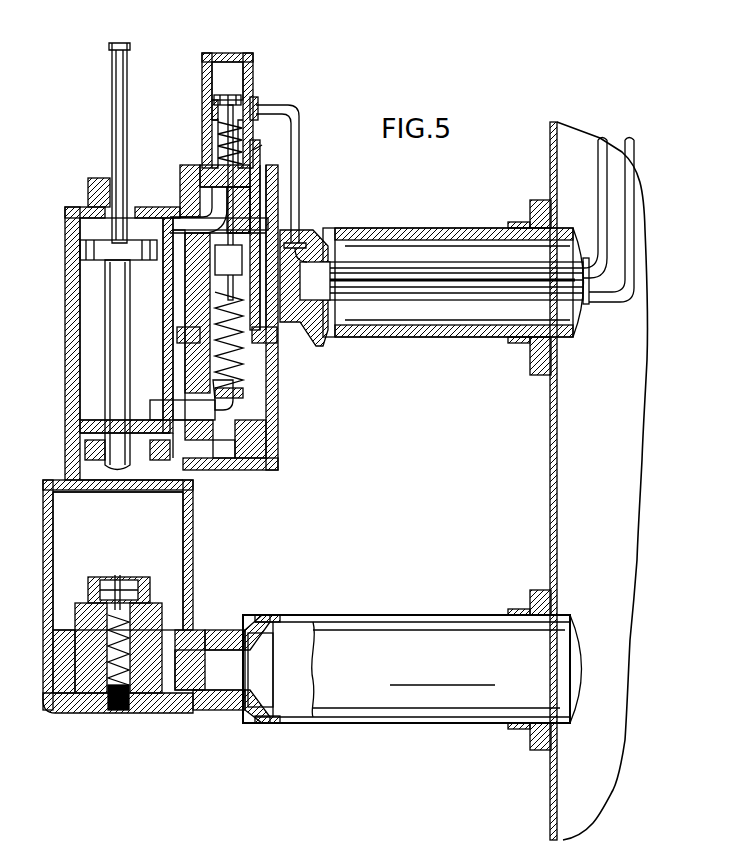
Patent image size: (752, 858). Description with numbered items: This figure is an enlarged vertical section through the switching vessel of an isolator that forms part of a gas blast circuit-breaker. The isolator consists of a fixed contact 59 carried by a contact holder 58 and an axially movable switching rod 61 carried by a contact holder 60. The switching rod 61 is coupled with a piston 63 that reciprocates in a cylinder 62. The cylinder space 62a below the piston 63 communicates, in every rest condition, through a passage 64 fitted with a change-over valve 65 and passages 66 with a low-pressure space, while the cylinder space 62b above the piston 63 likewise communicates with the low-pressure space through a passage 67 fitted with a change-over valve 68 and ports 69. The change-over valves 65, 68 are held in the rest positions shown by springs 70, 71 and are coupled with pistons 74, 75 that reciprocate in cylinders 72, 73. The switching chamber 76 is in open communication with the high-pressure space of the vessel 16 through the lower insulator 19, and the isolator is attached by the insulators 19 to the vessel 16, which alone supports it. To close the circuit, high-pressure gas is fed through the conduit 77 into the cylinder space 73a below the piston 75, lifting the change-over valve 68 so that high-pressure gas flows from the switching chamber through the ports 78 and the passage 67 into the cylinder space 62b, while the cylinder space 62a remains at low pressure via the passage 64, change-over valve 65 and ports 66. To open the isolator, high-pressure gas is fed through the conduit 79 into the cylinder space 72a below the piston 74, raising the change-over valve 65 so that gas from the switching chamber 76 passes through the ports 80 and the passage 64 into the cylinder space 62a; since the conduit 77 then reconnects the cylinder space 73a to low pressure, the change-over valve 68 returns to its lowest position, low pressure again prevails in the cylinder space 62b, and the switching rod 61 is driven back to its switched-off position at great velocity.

The vessel 16 is at (551, 440).
The insulator 19 is at (430, 333).
The contact holder 58 is at (52, 715).
The fixed contact 59 is at (135, 590).
The contact holder 60 is at (55, 478).
The switching rod 61 is at (118, 306).
The cylinder 62 is at (72, 270).
The cylinder space 62a is at (88, 368).
The cylinder space 62b is at (82, 212).
The piston 63 is at (88, 247).
The passage 64 is at (228, 410).
The change-over valve 65 is at (245, 362).
The passages 66 is at (279, 334).
The passage 67 is at (186, 200).
The change-over valve 68 is at (263, 182).
The ports 69 is at (253, 152).
The spring 70 is at (200, 312).
The spring 71 is at (219, 140).
The cylinder 72 is at (296, 236).
The cylinder space 72a is at (236, 292).
The cylinder 73 is at (228, 53).
The cylinder space 73a is at (213, 110).
The piston 74 is at (232, 285).
The piston 75 is at (232, 96).
The switching chamber 76 is at (140, 522).
The conduit 77 is at (600, 165).
The ports 78 is at (190, 184).
The conduit 79 is at (627, 192).
The ports 80 is at (248, 374).